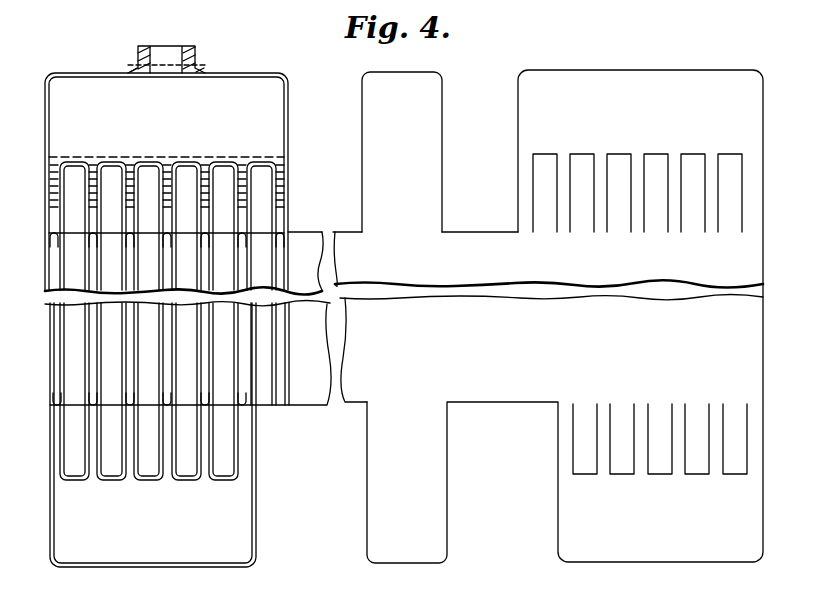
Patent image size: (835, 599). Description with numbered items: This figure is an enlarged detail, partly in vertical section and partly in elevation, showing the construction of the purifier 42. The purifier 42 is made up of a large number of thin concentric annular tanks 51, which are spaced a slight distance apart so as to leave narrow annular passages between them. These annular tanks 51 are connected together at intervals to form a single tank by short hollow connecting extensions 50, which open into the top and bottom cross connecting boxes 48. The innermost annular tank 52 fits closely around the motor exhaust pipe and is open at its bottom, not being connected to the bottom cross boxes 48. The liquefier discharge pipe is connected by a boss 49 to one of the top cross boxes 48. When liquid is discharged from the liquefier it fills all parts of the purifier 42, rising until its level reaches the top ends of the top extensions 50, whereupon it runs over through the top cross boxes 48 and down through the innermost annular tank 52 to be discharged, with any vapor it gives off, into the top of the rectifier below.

The purifier 42 is at (284, 318).
The cross connecting boxes 48 is at (290, 107).
The boss 49 is at (195, 50).
The hollow connecting extensions 50 is at (50, 221).
The annular tanks 51 is at (132, 332).
The innermost annular tank 52 is at (283, 343).